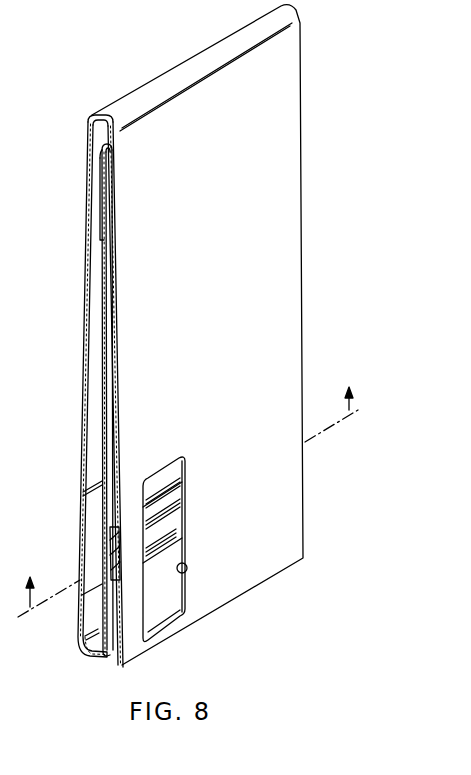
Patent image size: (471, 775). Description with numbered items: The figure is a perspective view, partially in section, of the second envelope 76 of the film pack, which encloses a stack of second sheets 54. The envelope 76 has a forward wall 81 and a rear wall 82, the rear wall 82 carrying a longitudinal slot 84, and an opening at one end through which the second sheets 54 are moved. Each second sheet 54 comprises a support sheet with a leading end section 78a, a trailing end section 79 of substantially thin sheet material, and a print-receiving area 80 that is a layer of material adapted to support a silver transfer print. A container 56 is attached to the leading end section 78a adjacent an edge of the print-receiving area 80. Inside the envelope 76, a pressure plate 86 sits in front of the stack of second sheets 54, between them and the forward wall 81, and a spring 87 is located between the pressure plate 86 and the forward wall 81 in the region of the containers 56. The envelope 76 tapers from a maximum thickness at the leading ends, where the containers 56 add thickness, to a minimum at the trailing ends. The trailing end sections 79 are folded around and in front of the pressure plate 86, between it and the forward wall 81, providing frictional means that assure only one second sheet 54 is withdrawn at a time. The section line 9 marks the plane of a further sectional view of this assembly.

The second envelope 76 is at (306, 98).
The rear wall 82 is at (212, 229).
The forward wall 81 is at (88, 267).
The pressure plate 86 is at (103, 350).
The trailing end section 79 is at (102, 195).
The spring 87 is at (92, 504).
The second sheet 54 is at (120, 449).
The print-receiving area 80 is at (170, 472).
The container 56 is at (170, 523).
The longitudinal slot 84 is at (187, 567).
The leading end section 78a is at (153, 603).
The section line 9- 9 is at (188, 491).